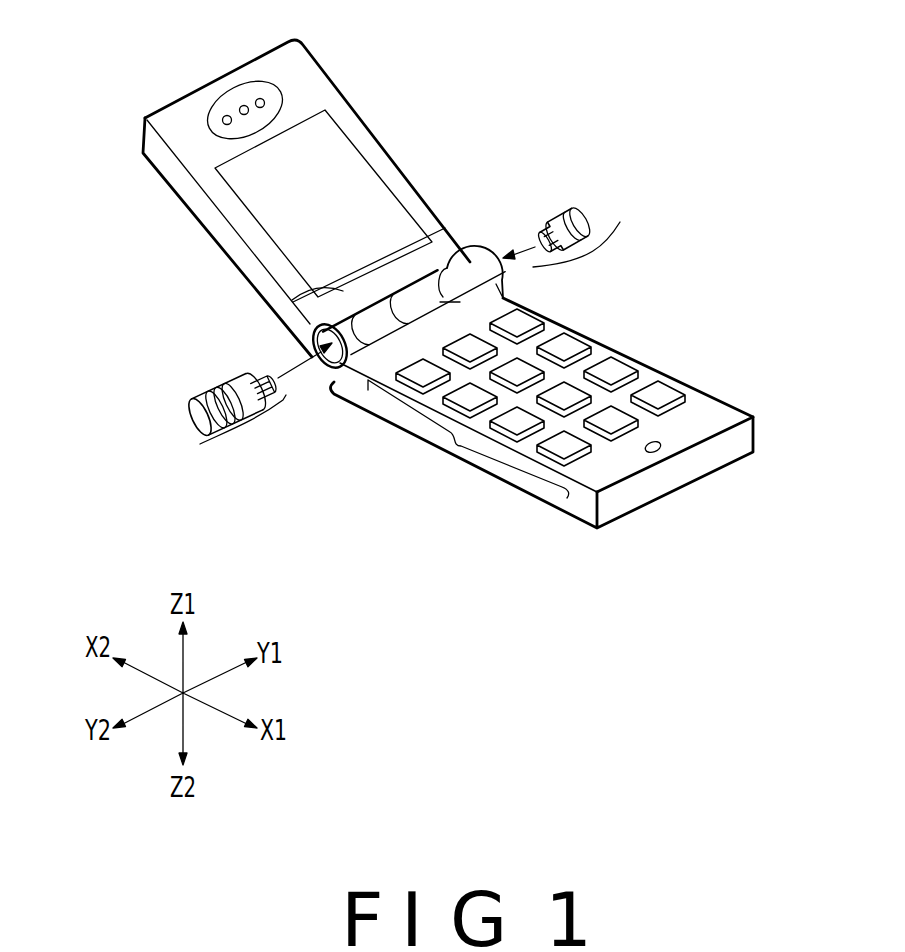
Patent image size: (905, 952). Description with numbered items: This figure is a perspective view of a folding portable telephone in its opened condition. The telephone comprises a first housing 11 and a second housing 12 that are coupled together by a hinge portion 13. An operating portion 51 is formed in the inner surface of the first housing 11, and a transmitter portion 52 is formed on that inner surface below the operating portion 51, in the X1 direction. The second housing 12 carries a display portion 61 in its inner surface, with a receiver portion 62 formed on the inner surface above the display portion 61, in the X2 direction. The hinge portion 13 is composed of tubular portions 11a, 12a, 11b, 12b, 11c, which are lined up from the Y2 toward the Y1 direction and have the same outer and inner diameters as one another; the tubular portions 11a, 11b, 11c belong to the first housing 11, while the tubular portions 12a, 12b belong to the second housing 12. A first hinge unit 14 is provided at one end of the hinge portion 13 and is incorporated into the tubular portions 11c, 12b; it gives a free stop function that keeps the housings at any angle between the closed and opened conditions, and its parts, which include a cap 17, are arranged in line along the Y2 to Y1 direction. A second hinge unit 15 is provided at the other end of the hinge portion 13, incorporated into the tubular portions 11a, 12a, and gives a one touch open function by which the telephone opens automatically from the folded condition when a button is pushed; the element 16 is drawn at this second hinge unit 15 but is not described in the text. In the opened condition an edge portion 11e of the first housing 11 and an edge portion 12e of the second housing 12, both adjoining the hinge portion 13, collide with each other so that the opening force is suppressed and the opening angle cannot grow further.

The first housing 11 is at (730, 410).
The tubular portion 11a is at (318, 327).
The tubular portion 11b is at (442, 302).
The tubular portion 11c is at (497, 273).
The edge portion of the first housing 11e is at (338, 392).
The second housing 12 is at (326, 90).
The tubular portion 12a is at (325, 293).
The tubular portion 12b is at (450, 256).
The edge portion of the second housing 12e is at (313, 364).
The hinge portion 13 is at (424, 287).
The first hinge unit 14 is at (583, 252).
The second hinge unit 15 is at (247, 427).
The hinge shaft 16 is at (178, 410).
The cap 17 is at (582, 210).
The operating portion 51 is at (452, 450).
The transmitter portion 52 is at (658, 450).
The display portion 61 is at (282, 214).
The receiver portion 62 is at (245, 104).